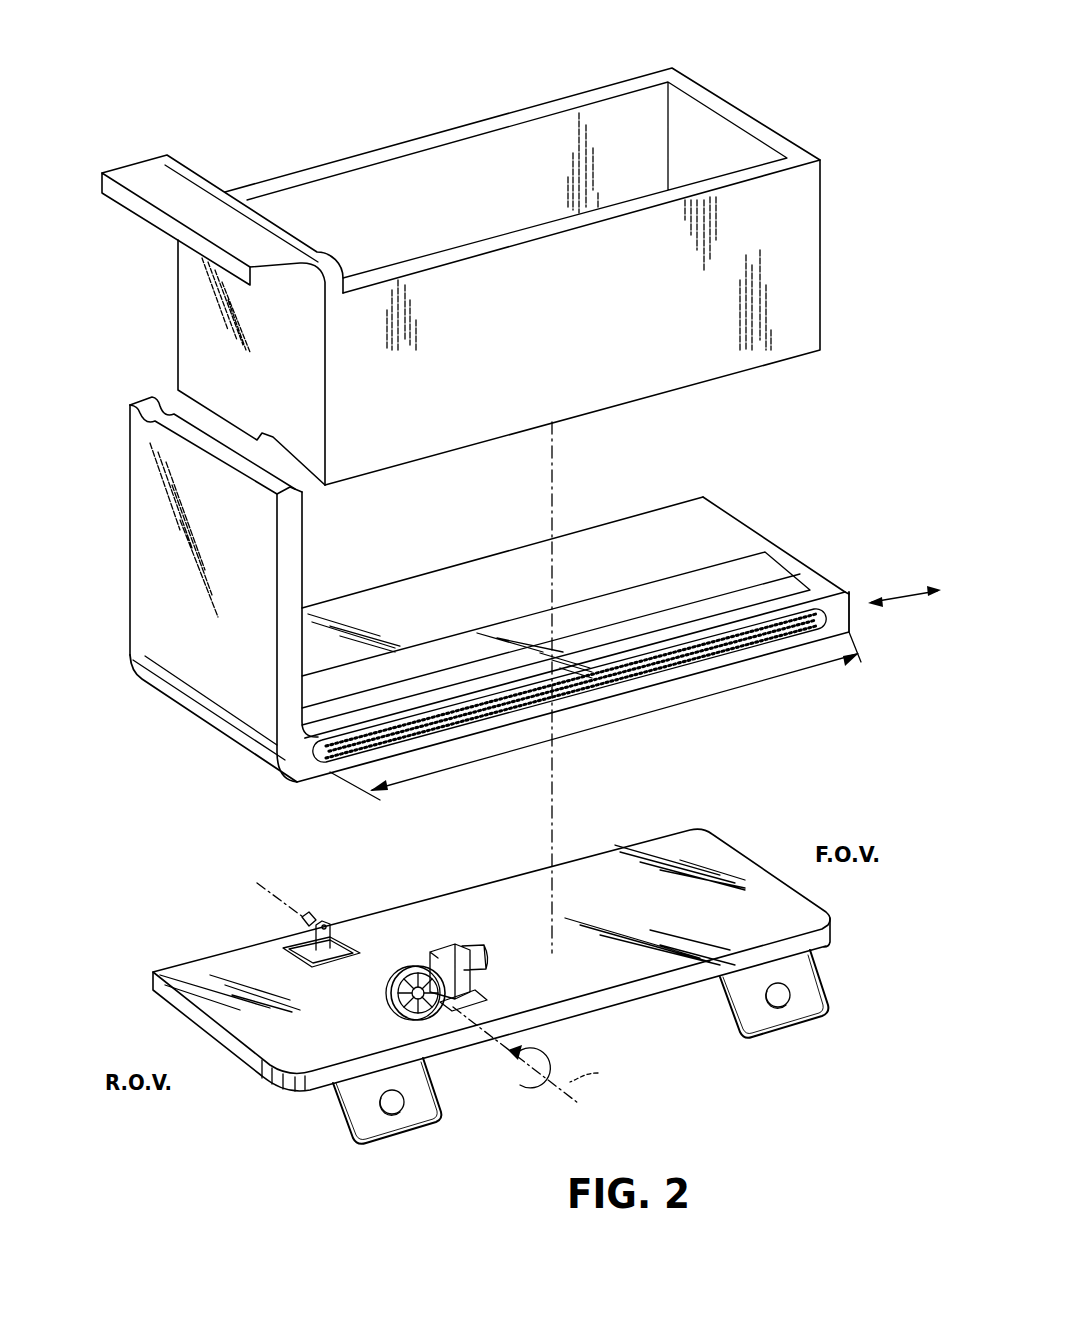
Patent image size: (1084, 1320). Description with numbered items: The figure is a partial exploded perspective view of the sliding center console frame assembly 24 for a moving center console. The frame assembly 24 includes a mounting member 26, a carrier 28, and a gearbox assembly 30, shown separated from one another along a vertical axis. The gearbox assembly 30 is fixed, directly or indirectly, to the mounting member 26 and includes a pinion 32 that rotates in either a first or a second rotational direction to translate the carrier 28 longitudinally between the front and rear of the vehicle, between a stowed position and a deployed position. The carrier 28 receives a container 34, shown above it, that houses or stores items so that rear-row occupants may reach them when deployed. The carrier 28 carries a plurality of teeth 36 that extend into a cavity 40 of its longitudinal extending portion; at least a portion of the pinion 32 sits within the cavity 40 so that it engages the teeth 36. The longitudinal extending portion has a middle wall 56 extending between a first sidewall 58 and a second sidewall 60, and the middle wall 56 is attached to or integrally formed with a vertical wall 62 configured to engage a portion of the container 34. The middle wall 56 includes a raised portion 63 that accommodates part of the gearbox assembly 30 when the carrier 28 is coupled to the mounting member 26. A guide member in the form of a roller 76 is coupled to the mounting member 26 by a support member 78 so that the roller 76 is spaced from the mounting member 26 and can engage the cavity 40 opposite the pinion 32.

The sliding center console frame assembly 24 is at (276, 82).
The mounting member 26 is at (177, 966).
The carrier 28 is at (126, 588).
The gearbox assembly 30 is at (427, 1020).
The pinion 32 is at (480, 984).
The container 34 is at (178, 347).
The plurality of teeth 36 is at (612, 723).
The cavity 40 is at (815, 622).
The middle wall 56 is at (712, 522).
The first sidewall 58 is at (297, 768).
The second sidewall 60 is at (477, 560).
The vertical wall 62 is at (130, 497).
The raised portion 63 is at (677, 593).
The roller 76 is at (313, 913).
The support member 78 is at (337, 928).